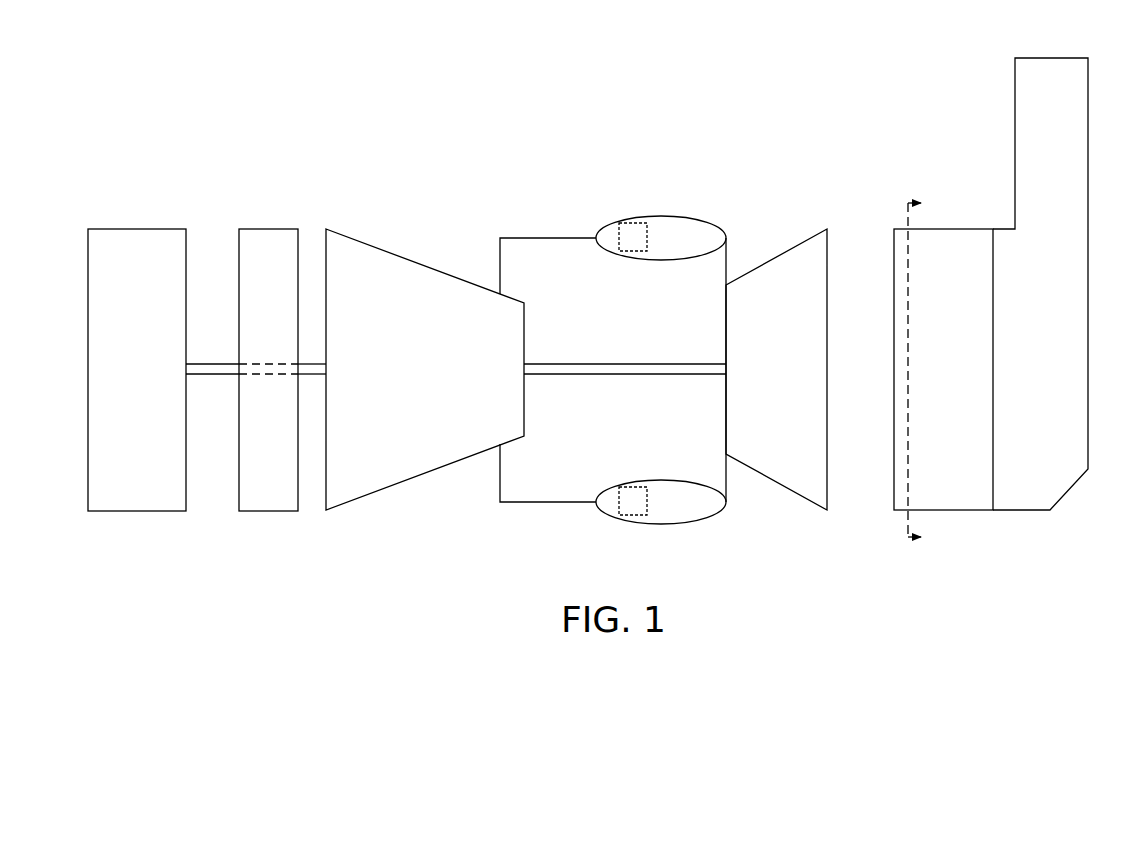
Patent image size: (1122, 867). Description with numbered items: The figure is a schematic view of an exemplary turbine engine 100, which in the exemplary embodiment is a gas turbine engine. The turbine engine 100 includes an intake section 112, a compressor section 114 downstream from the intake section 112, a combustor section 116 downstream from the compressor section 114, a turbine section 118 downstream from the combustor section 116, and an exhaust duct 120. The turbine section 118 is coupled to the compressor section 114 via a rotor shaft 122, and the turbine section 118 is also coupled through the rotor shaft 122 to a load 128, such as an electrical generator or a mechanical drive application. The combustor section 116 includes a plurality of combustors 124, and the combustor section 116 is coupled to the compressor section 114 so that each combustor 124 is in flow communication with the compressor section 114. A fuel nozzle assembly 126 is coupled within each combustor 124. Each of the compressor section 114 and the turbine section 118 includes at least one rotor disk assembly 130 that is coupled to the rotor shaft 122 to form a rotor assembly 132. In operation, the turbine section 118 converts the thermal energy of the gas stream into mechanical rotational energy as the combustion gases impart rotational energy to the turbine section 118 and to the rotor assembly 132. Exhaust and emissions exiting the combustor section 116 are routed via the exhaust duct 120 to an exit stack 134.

The turbine engine 100 is at (204, 124).
The intake section 112 is at (270, 229).
The compressor section 114 is at (362, 498).
The combustor section 116 is at (736, 211).
The turbine section 118 is at (810, 230).
The exhaust duct 120 is at (945, 229).
The rotor shaft 122 is at (630, 364).
The combustor 124 is at (666, 215).
The fuel nozzle assembly 126 is at (618, 222).
The load 128 is at (139, 229).
The rotor disk assembly 130 is at (418, 205).
The rotor assembly 132 is at (789, 521).
The exit stack 134 is at (1013, 112).